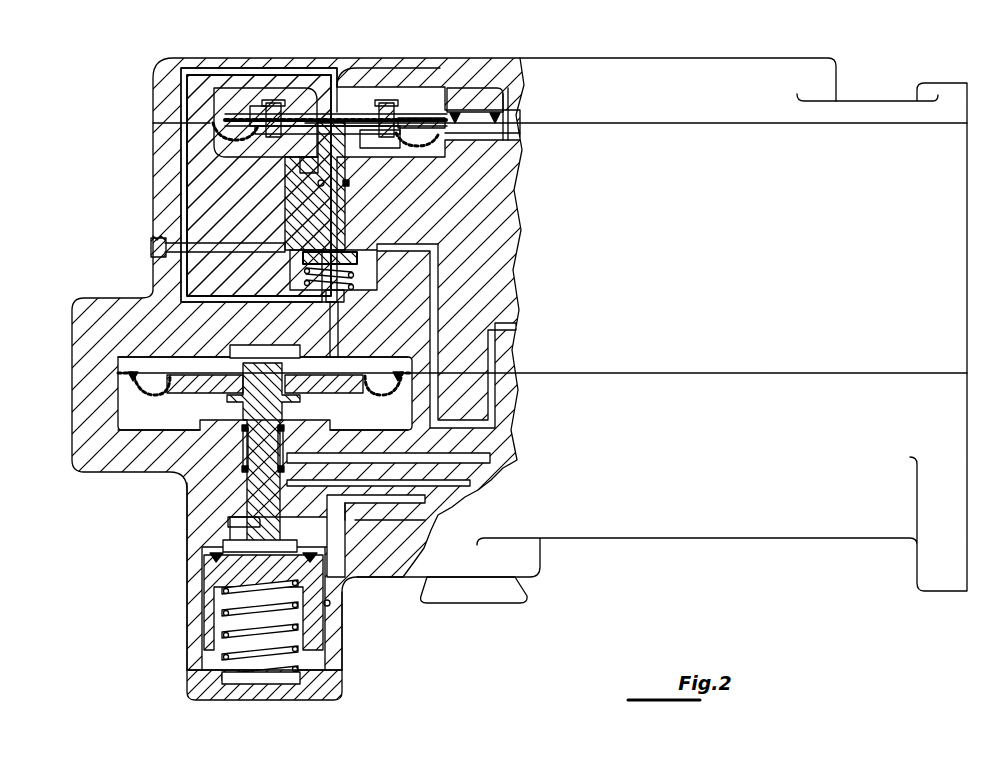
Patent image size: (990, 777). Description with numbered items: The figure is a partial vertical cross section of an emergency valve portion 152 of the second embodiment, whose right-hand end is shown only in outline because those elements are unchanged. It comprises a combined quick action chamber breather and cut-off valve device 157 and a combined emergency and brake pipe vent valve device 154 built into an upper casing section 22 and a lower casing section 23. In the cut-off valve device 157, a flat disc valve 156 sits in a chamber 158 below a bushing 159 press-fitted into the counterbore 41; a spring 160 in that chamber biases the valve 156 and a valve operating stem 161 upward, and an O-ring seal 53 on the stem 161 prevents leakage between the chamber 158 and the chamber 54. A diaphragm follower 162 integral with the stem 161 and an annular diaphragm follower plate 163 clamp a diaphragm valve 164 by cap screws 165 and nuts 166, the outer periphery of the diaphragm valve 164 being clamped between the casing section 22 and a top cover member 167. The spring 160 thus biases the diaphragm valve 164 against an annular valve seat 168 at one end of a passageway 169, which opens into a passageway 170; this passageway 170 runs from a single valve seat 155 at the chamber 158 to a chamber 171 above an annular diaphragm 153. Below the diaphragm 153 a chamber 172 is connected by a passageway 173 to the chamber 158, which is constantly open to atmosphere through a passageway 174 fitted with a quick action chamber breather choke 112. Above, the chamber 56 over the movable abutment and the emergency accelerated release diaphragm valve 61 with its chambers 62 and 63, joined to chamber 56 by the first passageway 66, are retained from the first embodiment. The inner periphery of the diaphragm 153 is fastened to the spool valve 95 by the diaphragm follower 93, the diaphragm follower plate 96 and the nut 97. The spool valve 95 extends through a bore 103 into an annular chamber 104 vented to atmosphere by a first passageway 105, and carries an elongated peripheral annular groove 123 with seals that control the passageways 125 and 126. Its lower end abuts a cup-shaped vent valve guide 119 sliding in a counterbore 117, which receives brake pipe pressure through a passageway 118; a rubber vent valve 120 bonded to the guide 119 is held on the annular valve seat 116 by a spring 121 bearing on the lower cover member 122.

The casing section 22 is at (96, 330).
The casing section 23 is at (96, 458).
The counterbore 41 is at (317, 185).
The O-ring seal 53 is at (350, 184).
The chamber 54 is at (378, 146).
The chamber 56 is at (375, 92).
The diaphragm valve 61 is at (520, 121).
The chamber 62 is at (520, 133).
The chamber 63 is at (518, 96).
The first passageway 66 is at (468, 92).
The diaphragm follower 93 is at (314, 395).
The spool valve 95 is at (262, 408).
The diaphragm follower plate 96 is at (332, 376).
The nut 97 is at (232, 354).
The bore 103 is at (230, 524).
The annular chamber 104 is at (240, 540).
The first passageway 105 is at (420, 518).
The quick action chamber breather choke 112 is at (152, 247).
The annular valve seat 116 is at (317, 550).
The counterbore 117 is at (331, 604).
The passageway 118 is at (462, 498).
The vent valve guide 119 is at (213, 620).
The vent valve 120 is at (208, 557).
The spring 121 is at (210, 654).
The lower cover member 122 is at (336, 686).
The elongated peripheral annular groove 123 is at (243, 444).
The passageway 125 is at (492, 476).
The passageway 126 is at (392, 456).
The emergency valve portion 152 is at (433, 56).
The annular diaphragm 153 is at (122, 392).
The combined emergency and brake pipe vent valve device 154 is at (187, 596).
The valve seat 155 is at (347, 284).
The flat disc valve 156 is at (303, 258).
The combined quick action chamber breather and cut-off valve device 157 is at (318, 56).
The chamber 158 is at (290, 280).
The bushing 159 is at (300, 214).
The spring 160 is at (357, 274).
The valve operating stem 161 is at (337, 205).
The diaphragm follower 162 is at (300, 130).
The diaphragm follower plate 163 is at (290, 104).
The diaphragm valve 164 is at (452, 138).
The cap screws 165 is at (266, 105).
The nuts 166 is at (262, 135).
The top cover member 167 is at (160, 88).
The annular valve seat 168 is at (343, 116).
The passageway 169 is at (223, 70).
The passageway 170 is at (330, 322).
The chamber 171 is at (120, 366).
The chamber 172 is at (122, 410).
The passageway 173 is at (438, 402).
The passageway 174 is at (228, 250).